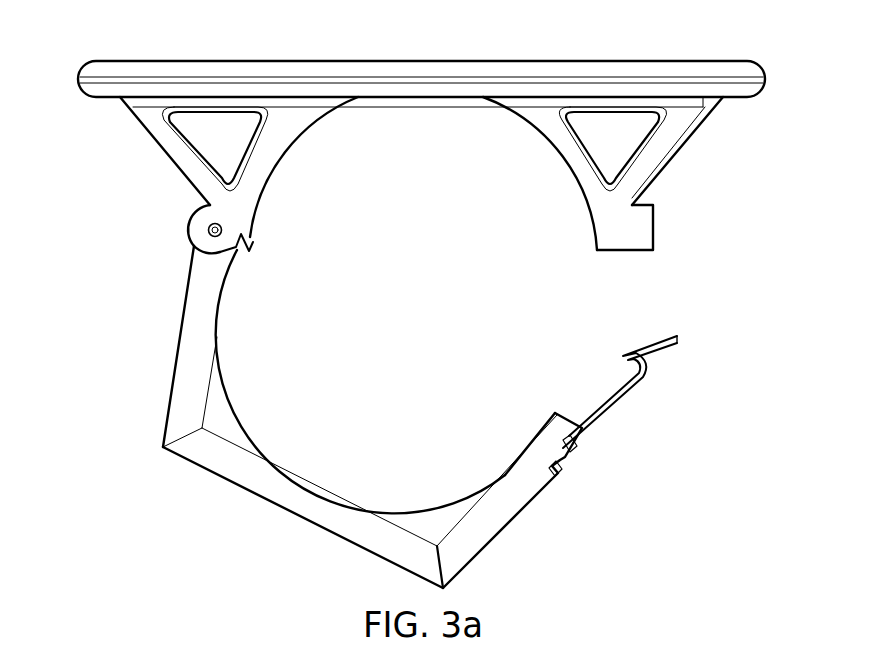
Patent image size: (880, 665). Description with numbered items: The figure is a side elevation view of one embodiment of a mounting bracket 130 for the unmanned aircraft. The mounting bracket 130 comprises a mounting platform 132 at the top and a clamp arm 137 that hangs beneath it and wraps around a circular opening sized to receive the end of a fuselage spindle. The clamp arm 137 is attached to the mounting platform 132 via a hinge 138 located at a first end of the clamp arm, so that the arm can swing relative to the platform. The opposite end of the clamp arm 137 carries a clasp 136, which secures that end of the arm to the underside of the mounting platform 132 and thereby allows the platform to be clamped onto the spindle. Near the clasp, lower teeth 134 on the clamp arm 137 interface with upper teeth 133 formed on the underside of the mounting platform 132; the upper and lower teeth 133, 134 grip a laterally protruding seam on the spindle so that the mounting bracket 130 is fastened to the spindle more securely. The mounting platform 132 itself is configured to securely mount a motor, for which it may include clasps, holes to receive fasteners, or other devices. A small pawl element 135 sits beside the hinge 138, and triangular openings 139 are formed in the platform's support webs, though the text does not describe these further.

The mounting bracket 130 is at (110, 553).
The mounting platform 132 is at (132, 65).
The upper teeth 133 is at (623, 250).
The lower teeth 134 is at (577, 412).
The pawl 135 is at (250, 237).
The clasp 136 is at (624, 403).
The clamp arm 137 is at (382, 540).
The hinge 138 is at (208, 229).
The triangular slot 139 is at (177, 158).